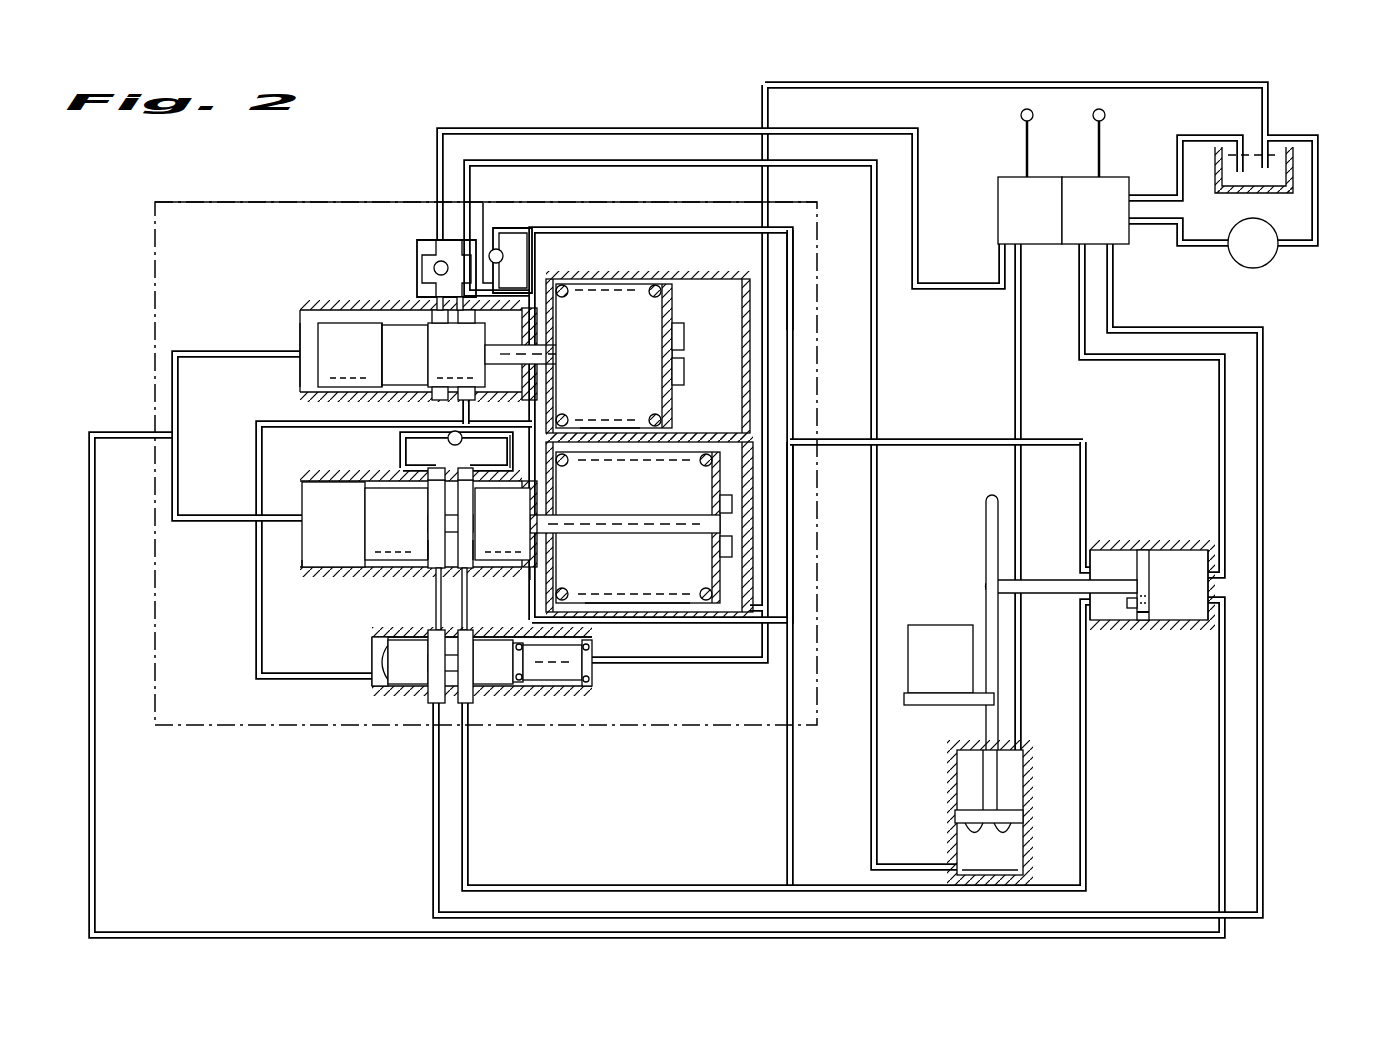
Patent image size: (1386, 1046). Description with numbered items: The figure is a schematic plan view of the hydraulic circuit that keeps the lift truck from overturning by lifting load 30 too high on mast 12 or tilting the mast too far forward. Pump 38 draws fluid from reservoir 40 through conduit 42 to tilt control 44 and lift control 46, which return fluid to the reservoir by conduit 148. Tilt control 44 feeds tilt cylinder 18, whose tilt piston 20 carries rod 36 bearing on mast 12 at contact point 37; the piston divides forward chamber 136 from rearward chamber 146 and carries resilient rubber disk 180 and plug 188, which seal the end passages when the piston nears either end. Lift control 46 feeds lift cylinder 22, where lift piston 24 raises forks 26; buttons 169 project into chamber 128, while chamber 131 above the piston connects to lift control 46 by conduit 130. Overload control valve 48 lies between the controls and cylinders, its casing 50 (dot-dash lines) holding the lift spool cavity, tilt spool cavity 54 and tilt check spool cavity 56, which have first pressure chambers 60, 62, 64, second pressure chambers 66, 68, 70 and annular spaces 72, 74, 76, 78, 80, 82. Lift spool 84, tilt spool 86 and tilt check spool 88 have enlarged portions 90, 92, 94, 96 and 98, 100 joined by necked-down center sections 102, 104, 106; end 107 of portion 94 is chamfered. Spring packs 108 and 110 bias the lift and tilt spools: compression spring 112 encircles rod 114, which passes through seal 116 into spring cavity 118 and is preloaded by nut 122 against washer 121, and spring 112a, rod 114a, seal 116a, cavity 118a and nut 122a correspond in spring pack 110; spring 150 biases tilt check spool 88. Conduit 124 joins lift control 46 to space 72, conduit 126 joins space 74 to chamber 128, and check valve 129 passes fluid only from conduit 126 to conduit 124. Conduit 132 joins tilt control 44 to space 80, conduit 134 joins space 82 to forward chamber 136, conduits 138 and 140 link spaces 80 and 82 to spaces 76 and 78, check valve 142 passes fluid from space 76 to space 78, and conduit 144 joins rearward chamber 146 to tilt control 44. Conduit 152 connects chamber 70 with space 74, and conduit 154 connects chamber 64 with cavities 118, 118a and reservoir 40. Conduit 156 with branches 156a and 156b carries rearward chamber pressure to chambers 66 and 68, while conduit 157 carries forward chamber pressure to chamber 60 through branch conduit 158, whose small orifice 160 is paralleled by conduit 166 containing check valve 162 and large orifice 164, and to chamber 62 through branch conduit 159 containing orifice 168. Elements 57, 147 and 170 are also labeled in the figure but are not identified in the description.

The mast 12 is at (985, 500).
The tilt cylinder 18 is at (1197, 546).
The tilt piston 20 is at (1124, 608).
The lift cylinder 22 is at (1030, 761).
The lift piston 24 is at (972, 812).
The forks 26 is at (950, 706).
The load 30 is at (940, 659).
The rod 36 is at (1040, 580).
The contact point 37 is at (986, 586).
The pump 38 is at (1253, 243).
The reservoir 40 is at (1254, 170).
The conduit 42 is at (1206, 243).
The tilt control 44 is at (1095, 176).
The lift control 46 is at (1030, 176).
The overload control valve 48 is at (238, 204).
The casing 50 is at (318, 204).
The tilt spool cavity 54 is at (387, 488).
The tilt check spool cavity 56 is at (400, 637).
The piston assembly 57 is at (383, 323).
The first pressure chamber 60 is at (540, 330).
The first pressure chamber 62 is at (556, 480).
The first pressure chamber 64 is at (586, 634).
The second pressure chamber 66 is at (308, 310).
The second pressure chamber 68 is at (302, 490).
The second pressure chamber 70 is at (372, 648).
The annular space 72 is at (433, 393).
The annular space 74 is at (477, 397).
The annular space 76 is at (428, 566).
The annular space 78 is at (472, 566).
The annular space 80 is at (432, 700).
The annular space 82 is at (470, 700).
The lift spool 84 is at (314, 366).
The tilt spool 86 is at (360, 550).
The tilt check spool 88 is at (378, 680).
The enlarged portion 90 is at (456, 355).
The enlarged portion 92 is at (350, 355).
The enlarged portion 94 is at (502, 524).
The enlarged portion 96 is at (396, 524).
The enlarged portion 98 is at (527, 662).
The enlarged portion 100 is at (410, 662).
The necked-down center section 102 is at (406, 355).
The necked-down center section 104 is at (450, 522).
The necked-down center section 106 is at (450, 660).
The chamfered end 107 is at (482, 490).
The spring pack 108 is at (651, 290).
The spring pack 110 is at (660, 594).
The compression spring 112 is at (572, 284).
The compression spring 112a is at (700, 462).
The rod 114 is at (578, 353).
The rod 114a is at (625, 522).
The seal 116 is at (558, 371).
The seal 116a is at (549, 507).
The compression spring cavity 118 is at (610, 409).
The compression spring cavity 118a is at (637, 569).
The washer 121 is at (672, 372).
The nut 122 is at (672, 335).
The nut 122a is at (716, 500).
The conduit 124 is at (688, 113).
The conduit 126 is at (880, 334).
The chamber 128 is at (999, 854).
The check valve 129 is at (434, 262).
The conduit 130 is at (1022, 397).
The chamber 131 is at (1013, 780).
The conduit 132 is at (1263, 362).
The conduit 134 is at (1085, 802).
The forward chamber 136 is at (1113, 585).
The conduit 138 is at (435, 583).
The conduit 140 is at (437, 603).
The check valve 142 is at (360, 429).
The conduit 144 is at (1222, 392).
The rearward chamber 146 is at (1185, 585).
The check valve 147 is at (447, 440).
The conduit 148 is at (1143, 196).
The spring 150 is at (592, 690).
The conduit 152 is at (258, 612).
The conduit 154 is at (1270, 106).
The conduit 156 is at (1220, 676).
The branch conduit 156a is at (201, 354).
The branch conduit 156b is at (215, 521).
The conduit 157 is at (920, 440).
The branch conduit 158 is at (796, 272).
The branch conduit 159 is at (796, 539).
The orifice 160 is at (550, 240).
The check valve 162 is at (500, 249).
The orifice 164 is at (483, 203).
The conduit 166 is at (522, 262).
The orifice 168 is at (523, 593).
The buttons 169 is at (965, 838).
The seal 170 is at (608, 298).
The resilient rubber disk 180 is at (1132, 614).
The resilient rubber plug 188 is at (1157, 566).